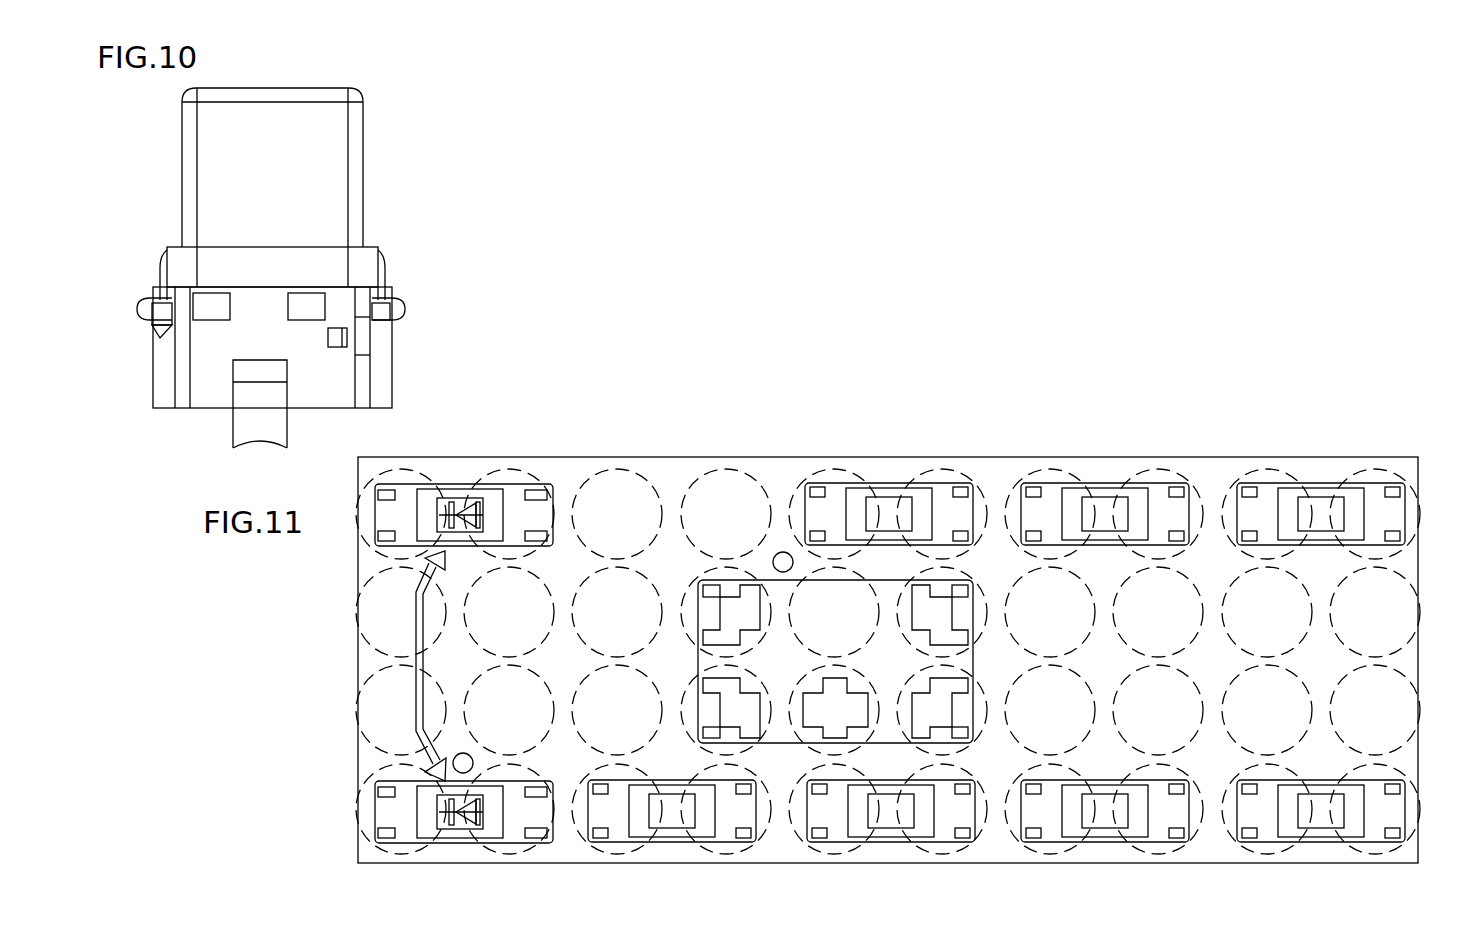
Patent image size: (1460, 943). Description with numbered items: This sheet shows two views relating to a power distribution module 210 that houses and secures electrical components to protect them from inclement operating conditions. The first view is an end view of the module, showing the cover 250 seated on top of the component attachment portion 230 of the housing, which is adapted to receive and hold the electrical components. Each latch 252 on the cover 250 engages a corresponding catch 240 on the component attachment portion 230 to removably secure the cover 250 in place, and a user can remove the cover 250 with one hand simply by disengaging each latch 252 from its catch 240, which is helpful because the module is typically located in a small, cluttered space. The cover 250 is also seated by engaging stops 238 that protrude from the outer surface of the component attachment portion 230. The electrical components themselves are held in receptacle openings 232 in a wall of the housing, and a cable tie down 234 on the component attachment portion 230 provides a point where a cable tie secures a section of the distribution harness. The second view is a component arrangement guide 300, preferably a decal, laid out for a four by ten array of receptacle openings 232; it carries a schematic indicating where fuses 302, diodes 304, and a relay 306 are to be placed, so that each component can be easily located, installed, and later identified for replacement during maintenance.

In FIG. 10, the power distribution module 210 is at (308, 252).
In FIG. 10, the component attachment portion 230 is at (335, 372).
In FIG. 10, the receptacle openings 232 is at (162, 285).
In FIG. 10, the first cable tie down 234 is at (268, 425).
In FIG. 10, the stops 238 is at (295, 310).
In FIG. 10, the catch 240 is at (387, 312).
In FIG. 10, the cover 250 is at (365, 112).
In FIG. 10, the latch 252 is at (385, 277).
In FIG. 11, the component arrangement guide 300 is at (933, 412).
In FIG. 11, the fuses 302 is at (1045, 510).
In FIG. 11, the diodes 304 is at (395, 522).
In FIG. 11, the relay 306 is at (773, 658).